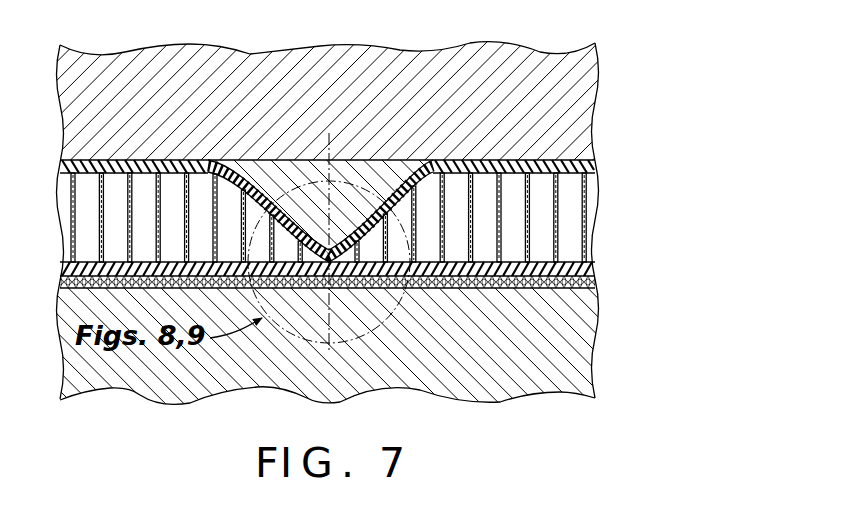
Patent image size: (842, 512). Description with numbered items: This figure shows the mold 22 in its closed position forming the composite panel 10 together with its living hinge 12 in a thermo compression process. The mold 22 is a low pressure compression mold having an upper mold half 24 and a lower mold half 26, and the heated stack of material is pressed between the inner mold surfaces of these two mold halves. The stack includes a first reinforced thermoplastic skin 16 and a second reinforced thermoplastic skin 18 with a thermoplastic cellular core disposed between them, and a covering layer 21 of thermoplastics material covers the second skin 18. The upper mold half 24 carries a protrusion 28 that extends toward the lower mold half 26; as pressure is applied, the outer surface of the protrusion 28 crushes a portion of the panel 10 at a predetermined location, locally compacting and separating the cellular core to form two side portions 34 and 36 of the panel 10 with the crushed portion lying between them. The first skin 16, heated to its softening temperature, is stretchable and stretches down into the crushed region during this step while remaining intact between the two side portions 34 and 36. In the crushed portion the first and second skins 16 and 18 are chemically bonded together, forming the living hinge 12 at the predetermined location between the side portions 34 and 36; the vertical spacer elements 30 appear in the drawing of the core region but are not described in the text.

The composite panel 10 is at (598, 160).
The living hinge 12 is at (330, 289).
The first reinforced thermoplastic skin 16 is at (598, 168).
The second reinforced thermoplastic skin 18 is at (597, 270).
The covering layer 21 is at (597, 283).
The mold 22 is at (712, 168).
The upper mold half 24 is at (598, 80).
The lower mold half 26 is at (597, 385).
The protrusion 28 is at (359, 195).
The spacers 30 is at (587, 222).
The first side portion 34 is at (130, 160).
The second side portion 36 is at (553, 160).